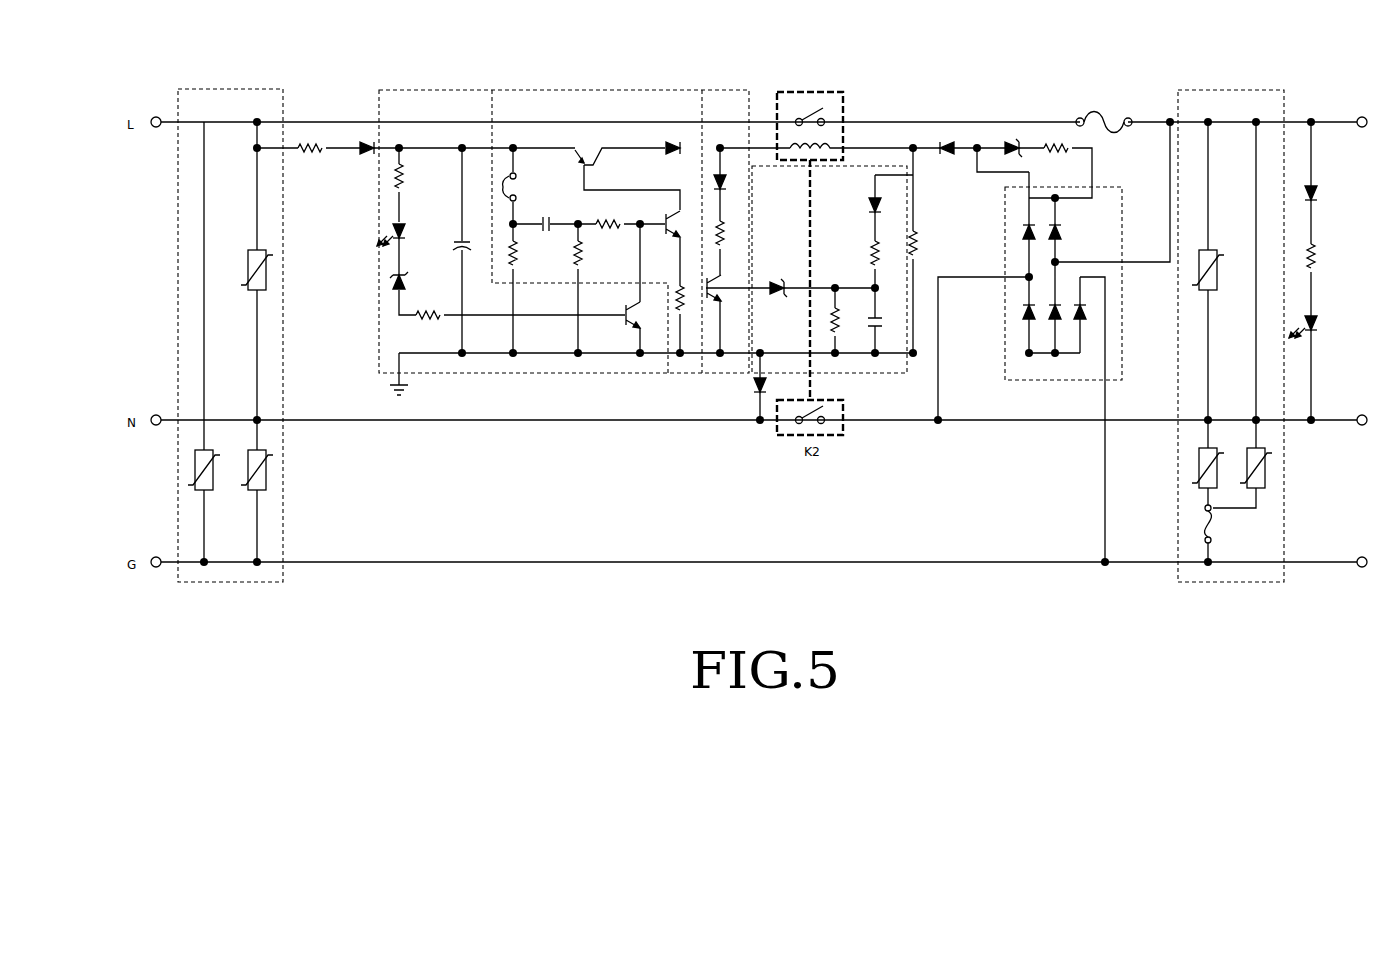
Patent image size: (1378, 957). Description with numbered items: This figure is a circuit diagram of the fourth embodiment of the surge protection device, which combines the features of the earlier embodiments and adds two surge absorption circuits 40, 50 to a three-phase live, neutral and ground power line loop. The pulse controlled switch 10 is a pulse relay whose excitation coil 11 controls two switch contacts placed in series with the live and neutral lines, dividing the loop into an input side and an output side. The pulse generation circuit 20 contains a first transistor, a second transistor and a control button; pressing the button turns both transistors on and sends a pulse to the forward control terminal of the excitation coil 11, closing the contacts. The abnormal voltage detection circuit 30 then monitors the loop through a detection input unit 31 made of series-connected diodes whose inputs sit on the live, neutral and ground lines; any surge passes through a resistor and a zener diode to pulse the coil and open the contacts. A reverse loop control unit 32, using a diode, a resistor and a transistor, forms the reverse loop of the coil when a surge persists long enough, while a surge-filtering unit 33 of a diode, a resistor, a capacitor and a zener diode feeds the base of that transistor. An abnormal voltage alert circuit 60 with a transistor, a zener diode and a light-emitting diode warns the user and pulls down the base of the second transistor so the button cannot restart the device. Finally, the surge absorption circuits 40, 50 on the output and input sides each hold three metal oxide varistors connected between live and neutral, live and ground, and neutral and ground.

The pulse controlled switch 10 is at (817, 218).
The excitation coil 11 is at (832, 146).
The pulse generation circuit 20 is at (609, 227).
The abnormal voltage detection circuit 30 is at (990, 118).
The detection input unit 31 is at (1062, 385).
The reverse loop control unit 32 is at (723, 375).
The surge-filtering unit 33 is at (858, 372).
The surge absorption circuit 40 is at (1218, 585).
The surge absorption circuit 50 is at (230, 585).
The abnormal voltage alert circuit 60 is at (375, 322).